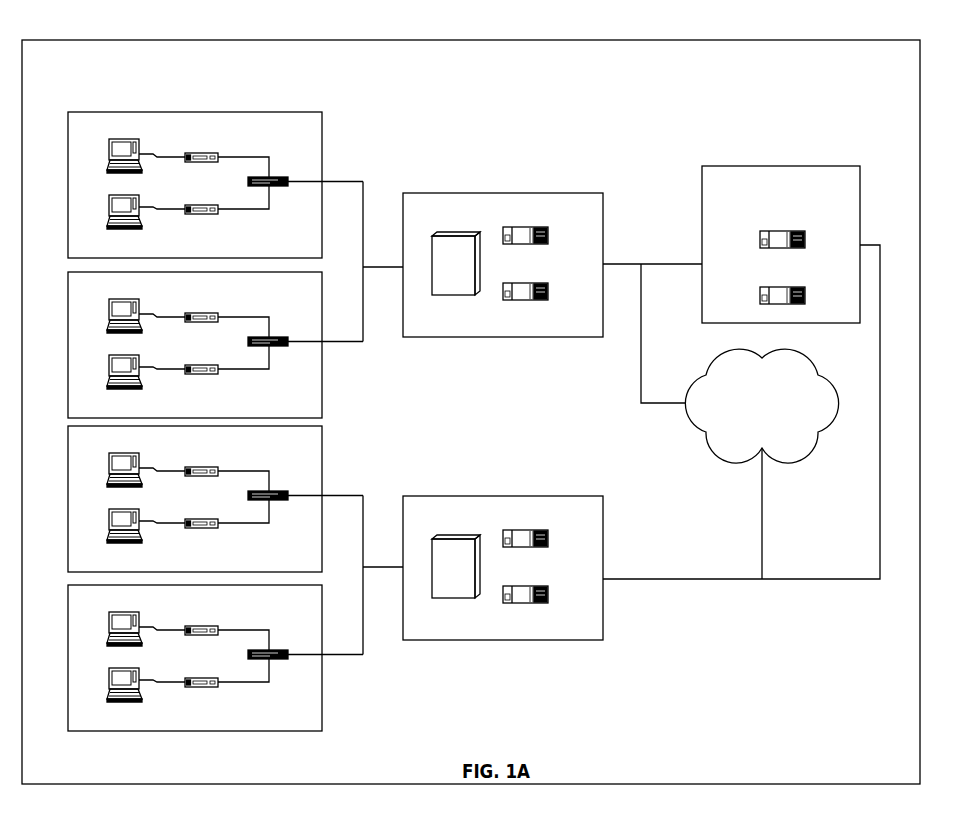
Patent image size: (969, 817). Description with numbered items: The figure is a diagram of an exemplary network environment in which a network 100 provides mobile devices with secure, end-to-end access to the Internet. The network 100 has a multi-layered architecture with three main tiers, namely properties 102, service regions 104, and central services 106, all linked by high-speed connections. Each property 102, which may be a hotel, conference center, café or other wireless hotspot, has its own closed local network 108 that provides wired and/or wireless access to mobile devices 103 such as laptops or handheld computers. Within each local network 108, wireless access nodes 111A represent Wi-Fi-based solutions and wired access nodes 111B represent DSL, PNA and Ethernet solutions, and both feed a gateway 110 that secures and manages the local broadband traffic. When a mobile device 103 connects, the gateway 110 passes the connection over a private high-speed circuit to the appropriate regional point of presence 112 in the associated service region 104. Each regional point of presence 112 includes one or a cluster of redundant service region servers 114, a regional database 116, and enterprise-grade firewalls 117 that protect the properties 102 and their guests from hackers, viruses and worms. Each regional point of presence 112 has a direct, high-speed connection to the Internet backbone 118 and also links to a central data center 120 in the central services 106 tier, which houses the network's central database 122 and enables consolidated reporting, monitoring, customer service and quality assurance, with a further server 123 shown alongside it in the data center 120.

The network 100 is at (363, 40).
The properties 102 is at (199, 51).
The mobile devices 103 is at (125, 139).
The service regions 104 is at (508, 64).
The central services 106 is at (796, 64).
The local network 108 is at (68, 186).
The gateway 110 is at (277, 177).
The wireless access nodes 111A is at (200, 153).
The wired access nodes 111B is at (206, 214).
The regional point of presence 112 is at (503, 193).
The service region servers 114 is at (527, 227).
The regional database 116 is at (528, 283).
The firewalls 117 is at (452, 233).
The Internet backbone 118 is at (761, 406).
The central data center 120 is at (781, 244).
The central database 122 is at (783, 231).
The data center server 123 is at (786, 287).